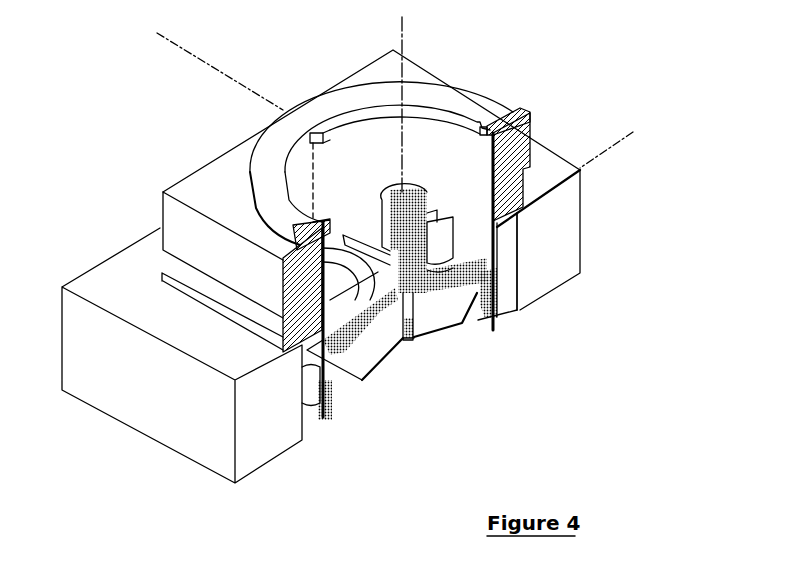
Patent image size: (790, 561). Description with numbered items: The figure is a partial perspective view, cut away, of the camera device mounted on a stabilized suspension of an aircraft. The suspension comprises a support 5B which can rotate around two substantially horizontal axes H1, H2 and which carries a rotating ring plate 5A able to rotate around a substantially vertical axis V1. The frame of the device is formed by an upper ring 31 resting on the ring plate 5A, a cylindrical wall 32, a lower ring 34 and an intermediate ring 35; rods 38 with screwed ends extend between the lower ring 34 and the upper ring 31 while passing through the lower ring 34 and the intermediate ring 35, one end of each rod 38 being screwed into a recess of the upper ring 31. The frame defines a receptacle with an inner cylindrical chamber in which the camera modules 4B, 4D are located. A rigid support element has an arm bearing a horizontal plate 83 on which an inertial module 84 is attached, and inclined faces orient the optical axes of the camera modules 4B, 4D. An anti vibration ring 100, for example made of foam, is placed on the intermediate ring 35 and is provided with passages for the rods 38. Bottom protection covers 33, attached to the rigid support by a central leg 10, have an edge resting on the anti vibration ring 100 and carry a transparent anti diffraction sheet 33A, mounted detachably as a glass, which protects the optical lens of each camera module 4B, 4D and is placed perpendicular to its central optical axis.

The upper ring 31 is at (373, 97).
The rod 38 is at (312, 190).
The rotating ring plate 5A is at (515, 112).
The support 5B is at (530, 143).
The camera module 4B is at (320, 403).
The anti vibration ring 100 is at (338, 400).
The inertial module 84 is at (408, 190).
The horizontal plate 83 is at (372, 226).
The camera module 4D is at (440, 238).
The cylindrical wall 32 is at (497, 255).
The lower ring 34 is at (500, 316).
The intermediate ring 35 is at (487, 320).
The bottom protection cover 33 is at (373, 370).
The transparent anti diffraction sheet 33A is at (418, 312).
The central leg 10 is at (413, 308).
The vertical axis V1 is at (403, 72).
The horizontal axis H1 is at (626, 137).
The horizontal axis H2 is at (209, 62).